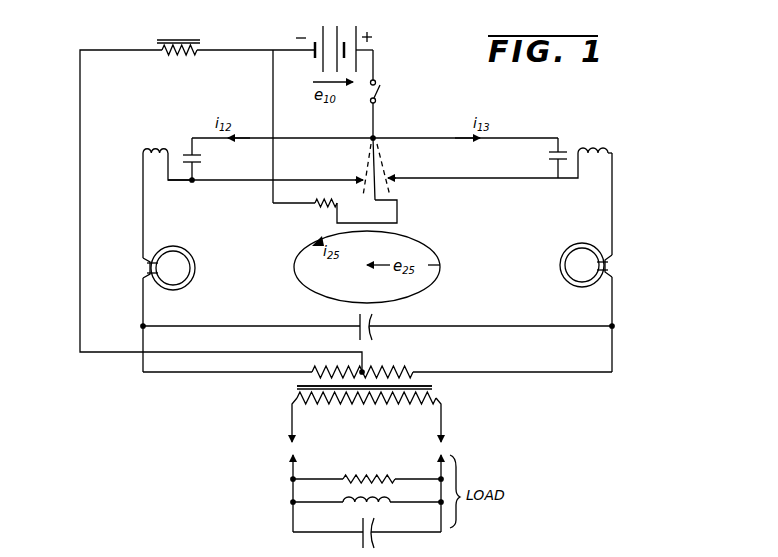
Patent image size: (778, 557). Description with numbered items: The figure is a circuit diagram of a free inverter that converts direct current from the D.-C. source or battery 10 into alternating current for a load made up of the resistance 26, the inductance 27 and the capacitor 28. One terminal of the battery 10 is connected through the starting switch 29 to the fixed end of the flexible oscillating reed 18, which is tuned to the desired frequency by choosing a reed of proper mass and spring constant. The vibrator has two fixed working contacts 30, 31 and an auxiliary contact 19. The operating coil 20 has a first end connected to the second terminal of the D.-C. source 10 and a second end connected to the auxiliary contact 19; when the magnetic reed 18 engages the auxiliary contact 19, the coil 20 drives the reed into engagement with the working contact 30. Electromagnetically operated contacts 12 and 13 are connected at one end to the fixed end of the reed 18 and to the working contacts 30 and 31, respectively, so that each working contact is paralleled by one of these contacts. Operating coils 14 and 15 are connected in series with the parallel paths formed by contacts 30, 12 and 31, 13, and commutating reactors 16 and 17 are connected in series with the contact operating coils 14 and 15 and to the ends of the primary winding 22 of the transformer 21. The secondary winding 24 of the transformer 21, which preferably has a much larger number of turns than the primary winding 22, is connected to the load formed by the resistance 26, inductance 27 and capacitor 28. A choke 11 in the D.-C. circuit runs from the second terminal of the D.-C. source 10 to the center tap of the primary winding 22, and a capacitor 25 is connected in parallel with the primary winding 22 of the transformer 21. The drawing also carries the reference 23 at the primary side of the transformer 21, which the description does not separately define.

The D.-C. source or battery 10 is at (362, 26).
The choke 11 is at (187, 37).
The electromagnetically operated contact 12 is at (204, 160).
The electromagnetically operated contact 13 is at (548, 157).
The operating coil 14 is at (166, 146).
The operating coil 15 is at (592, 143).
The commutating reactor 16 is at (188, 252).
The commutating reactor 17 is at (558, 253).
The flexible oscillating reed 18 is at (384, 148).
The auxiliary contact 19 is at (390, 198).
The operating coil 20 is at (320, 207).
The transformer 21 is at (437, 388).
The primary winding 22 is at (409, 367).
The primary winding 23 is at (328, 368).
The secondary winding 24 is at (378, 405).
The capacitor 25 is at (372, 318).
The resistance 26 is at (387, 457).
The inductance 27 is at (388, 498).
The capacitor 28 is at (376, 527).
The starting switch 29 is at (381, 97).
The fixed working contact 30 is at (360, 175).
The fixed working contact 31 is at (393, 175).